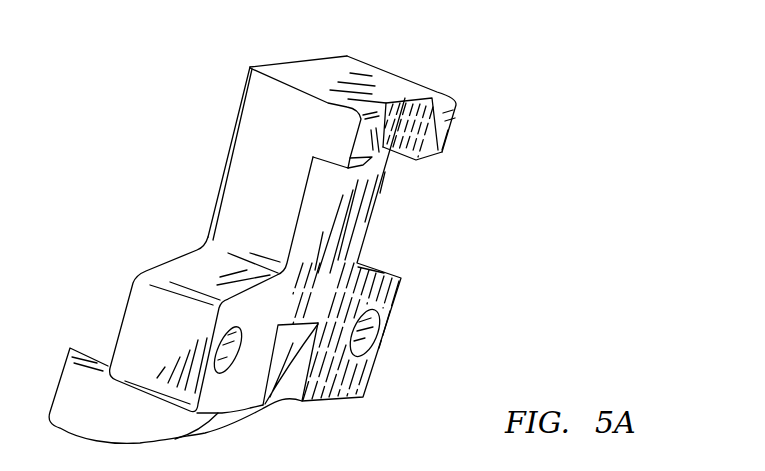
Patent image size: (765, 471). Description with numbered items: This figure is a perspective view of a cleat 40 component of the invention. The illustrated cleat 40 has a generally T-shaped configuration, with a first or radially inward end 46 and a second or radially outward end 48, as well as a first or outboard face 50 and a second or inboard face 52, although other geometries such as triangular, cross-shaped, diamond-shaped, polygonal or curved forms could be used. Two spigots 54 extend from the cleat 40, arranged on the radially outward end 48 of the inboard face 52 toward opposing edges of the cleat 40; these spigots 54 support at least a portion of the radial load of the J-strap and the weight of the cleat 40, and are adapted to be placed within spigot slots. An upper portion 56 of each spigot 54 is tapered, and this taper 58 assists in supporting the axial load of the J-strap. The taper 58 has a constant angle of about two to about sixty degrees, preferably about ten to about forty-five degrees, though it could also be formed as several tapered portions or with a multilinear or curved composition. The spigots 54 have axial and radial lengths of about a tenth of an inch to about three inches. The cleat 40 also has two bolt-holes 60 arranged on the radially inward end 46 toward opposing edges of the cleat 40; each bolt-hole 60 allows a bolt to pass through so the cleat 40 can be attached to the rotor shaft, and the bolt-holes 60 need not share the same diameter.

The cleat 40 is at (175, 148).
The radially inward end 46 is at (140, 322).
The radially outward end 48 is at (260, 127).
The outboard face 50 is at (218, 200).
The inboard face 52 is at (365, 218).
The spigot 54 is at (363, 147).
The upper portion of the spigot 56 is at (408, 107).
The taper 58 is at (430, 93).
The bolt-hole 60 is at (367, 335).